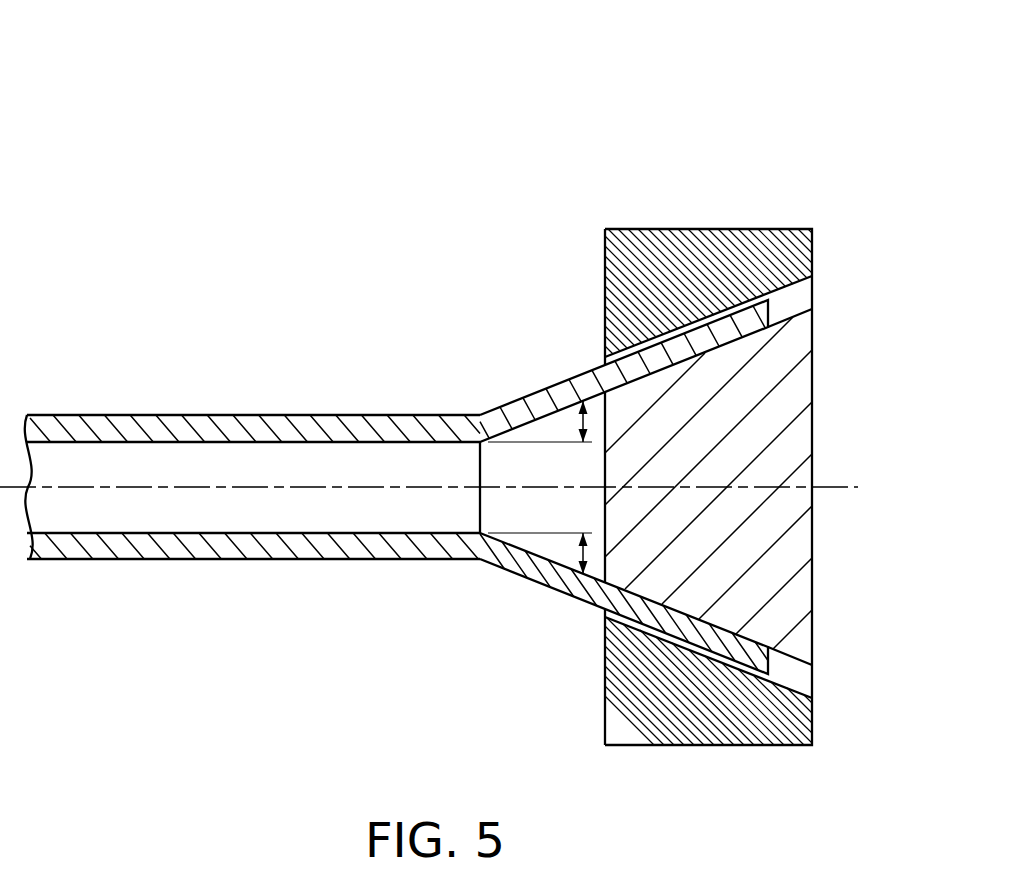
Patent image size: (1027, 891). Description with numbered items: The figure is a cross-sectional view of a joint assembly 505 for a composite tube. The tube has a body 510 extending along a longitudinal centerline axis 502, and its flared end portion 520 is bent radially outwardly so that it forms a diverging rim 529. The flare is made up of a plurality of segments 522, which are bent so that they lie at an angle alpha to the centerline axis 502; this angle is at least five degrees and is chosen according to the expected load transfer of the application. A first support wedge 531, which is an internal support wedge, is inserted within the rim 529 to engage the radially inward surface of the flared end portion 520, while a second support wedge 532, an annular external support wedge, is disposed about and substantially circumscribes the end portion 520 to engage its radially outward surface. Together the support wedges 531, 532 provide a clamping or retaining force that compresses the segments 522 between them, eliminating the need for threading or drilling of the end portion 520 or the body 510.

The joint assembly 505 is at (160, 124).
The longitudinal centerline axis 502 is at (850, 487).
The body 510 is at (247, 430).
The flared end portion 520 is at (821, 182).
The plurality of segments 522 is at (603, 596).
The rim 529 is at (768, 299).
The first support wedge 531 is at (790, 543).
The second support wedge 532 is at (792, 258).